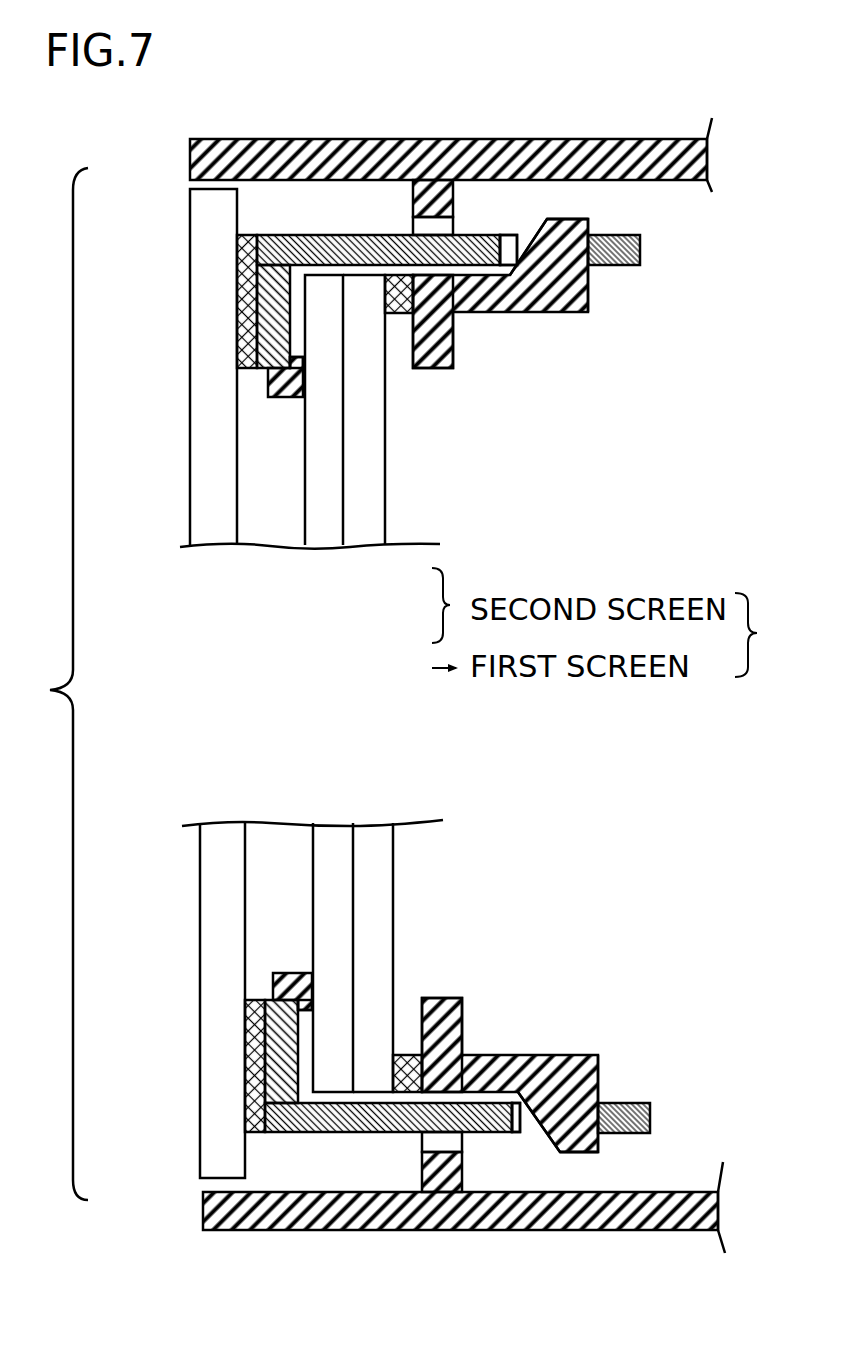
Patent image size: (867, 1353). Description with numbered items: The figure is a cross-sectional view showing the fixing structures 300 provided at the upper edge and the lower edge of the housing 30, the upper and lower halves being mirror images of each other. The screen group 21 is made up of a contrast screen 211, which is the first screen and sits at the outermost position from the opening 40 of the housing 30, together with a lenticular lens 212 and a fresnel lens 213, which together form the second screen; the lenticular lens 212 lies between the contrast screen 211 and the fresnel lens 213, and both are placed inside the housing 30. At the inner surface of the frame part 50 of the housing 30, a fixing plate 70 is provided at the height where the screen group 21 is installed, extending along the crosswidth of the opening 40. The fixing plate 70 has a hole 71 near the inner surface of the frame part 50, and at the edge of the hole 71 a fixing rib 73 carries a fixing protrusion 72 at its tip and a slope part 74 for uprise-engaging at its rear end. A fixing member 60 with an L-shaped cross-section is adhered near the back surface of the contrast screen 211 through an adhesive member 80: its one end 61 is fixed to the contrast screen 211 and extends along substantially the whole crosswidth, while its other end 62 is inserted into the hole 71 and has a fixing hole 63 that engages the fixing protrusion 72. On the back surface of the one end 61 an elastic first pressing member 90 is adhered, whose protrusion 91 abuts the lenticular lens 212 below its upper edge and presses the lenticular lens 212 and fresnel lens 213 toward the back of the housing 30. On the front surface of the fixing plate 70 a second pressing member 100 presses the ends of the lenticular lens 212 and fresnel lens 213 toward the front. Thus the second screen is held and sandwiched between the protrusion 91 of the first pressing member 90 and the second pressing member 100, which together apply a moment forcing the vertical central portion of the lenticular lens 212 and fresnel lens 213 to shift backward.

The housing 30 is at (375, 74).
The opening 40 is at (188, 583).
The fixing structure 300 is at (692, 437).
The frame part 50 is at (444, 139).
The fixing member 60 is at (280, 252).
The one end 61 is at (240, 330).
The other end 62 is at (640, 253).
The fixing hole 63 is at (515, 240).
The fixing plate 70 is at (455, 333).
The hole 71 is at (437, 228).
The fixing protrusion 72 is at (588, 221).
The fixing rib 73 is at (590, 292).
The slope part 74 is at (552, 310).
The adhesive member 80 is at (237, 264).
The first pressing member 90 is at (276, 397).
The protrusion 91 is at (300, 368).
The second pressing member 100 is at (400, 315).
The screen group 21 is at (767, 635).
The contrast screen 211 is at (220, 547).
The lenticular lens 212 is at (345, 547).
The fresnel lens 213 is at (375, 545).